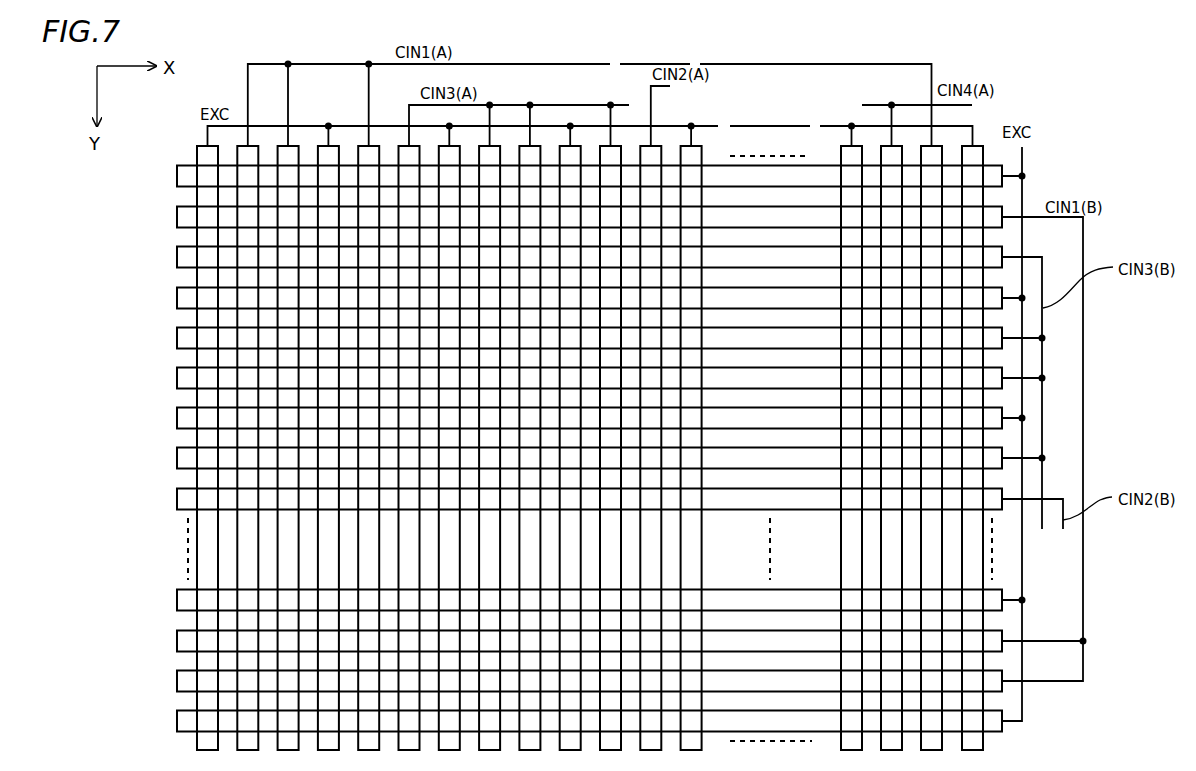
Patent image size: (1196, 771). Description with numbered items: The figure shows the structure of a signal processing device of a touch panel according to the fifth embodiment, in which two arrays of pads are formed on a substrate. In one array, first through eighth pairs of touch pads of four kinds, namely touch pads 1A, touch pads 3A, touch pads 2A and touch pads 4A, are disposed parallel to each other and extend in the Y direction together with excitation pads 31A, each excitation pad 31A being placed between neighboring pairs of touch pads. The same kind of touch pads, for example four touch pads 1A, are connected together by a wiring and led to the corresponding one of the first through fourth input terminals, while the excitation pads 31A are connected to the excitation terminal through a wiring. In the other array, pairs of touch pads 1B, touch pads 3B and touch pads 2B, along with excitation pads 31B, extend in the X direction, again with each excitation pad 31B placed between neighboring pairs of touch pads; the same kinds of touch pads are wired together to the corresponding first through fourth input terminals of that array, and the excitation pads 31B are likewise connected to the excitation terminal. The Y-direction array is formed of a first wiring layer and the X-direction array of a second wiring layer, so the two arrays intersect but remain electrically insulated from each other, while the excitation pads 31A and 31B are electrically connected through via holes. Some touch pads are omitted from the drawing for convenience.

The excitation pad 31A is at (198, 157).
The excitation pad 31B is at (1001, 168).
The first kind of touch pad 1A is at (589, 448).
The second kind of touch pad 2A is at (650, 448).
The third kind of touch pad 3A is at (510, 448).
The fourth kind of touch pad 4A is at (891, 448).
The first kind of touch pad 1B is at (589, 449).
The second kind of touch pad 2B is at (589, 499).
The third kind of touch pad 3B is at (589, 358).